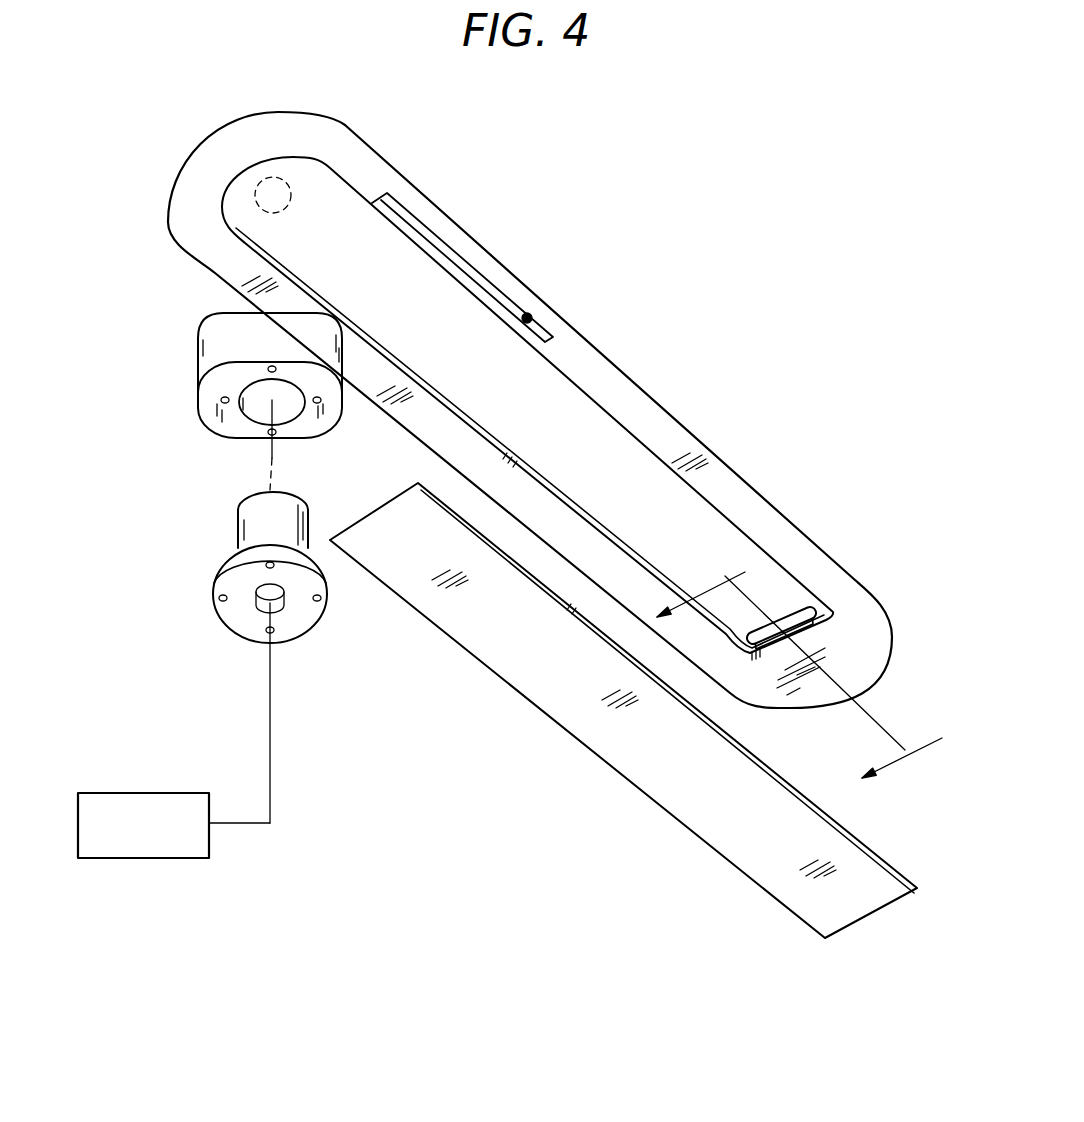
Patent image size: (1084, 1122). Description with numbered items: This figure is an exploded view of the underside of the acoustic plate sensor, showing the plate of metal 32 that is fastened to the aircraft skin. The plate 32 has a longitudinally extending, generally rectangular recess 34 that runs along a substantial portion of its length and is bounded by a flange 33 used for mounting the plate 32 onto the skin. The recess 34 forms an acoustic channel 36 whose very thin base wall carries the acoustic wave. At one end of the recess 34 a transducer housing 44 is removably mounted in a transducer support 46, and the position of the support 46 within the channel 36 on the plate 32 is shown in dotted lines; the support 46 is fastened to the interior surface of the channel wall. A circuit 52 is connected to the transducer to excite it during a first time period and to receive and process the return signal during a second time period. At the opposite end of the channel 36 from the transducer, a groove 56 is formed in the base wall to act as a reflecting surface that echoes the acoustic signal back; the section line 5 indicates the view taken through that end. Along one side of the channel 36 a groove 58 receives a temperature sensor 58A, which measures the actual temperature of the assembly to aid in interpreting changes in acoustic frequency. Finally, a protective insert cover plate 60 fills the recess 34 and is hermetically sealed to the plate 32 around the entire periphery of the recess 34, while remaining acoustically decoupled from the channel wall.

The flange 33 is at (197, 220).
The recess 34 is at (700, 507).
The groove 58 is at (500, 290).
The temperature sensor 58A is at (533, 316).
The acoustic channel 36 is at (725, 612).
The groove 56 is at (828, 615).
The plate of metal 32 is at (807, 683).
The section line 5- 5 is at (800, 668).
The transducer support 46 is at (213, 357).
The transducer housing 44 is at (250, 528).
The circuit 52 is at (145, 858).
The protective insert cover plate 60 is at (715, 818).